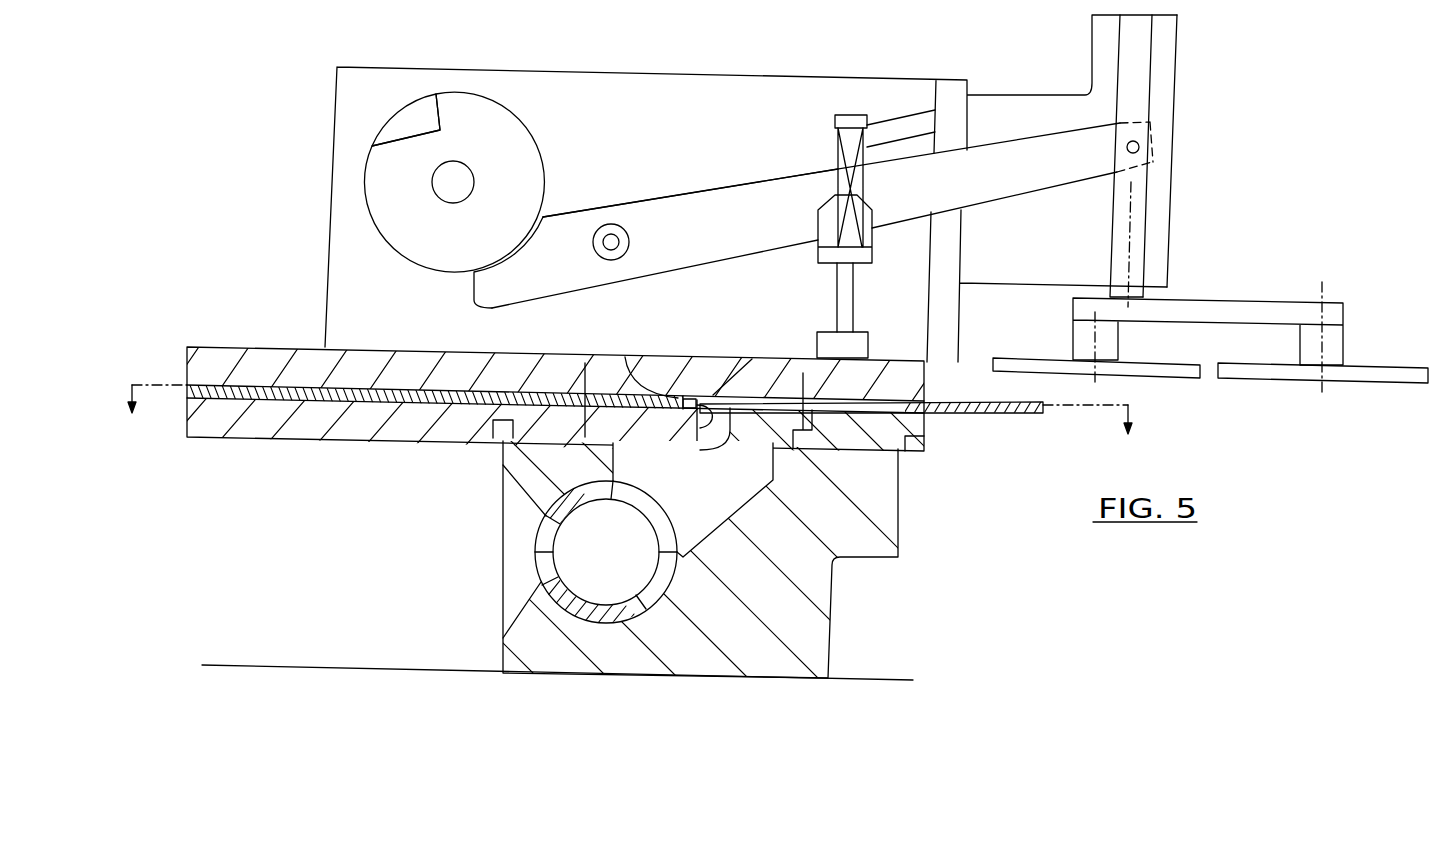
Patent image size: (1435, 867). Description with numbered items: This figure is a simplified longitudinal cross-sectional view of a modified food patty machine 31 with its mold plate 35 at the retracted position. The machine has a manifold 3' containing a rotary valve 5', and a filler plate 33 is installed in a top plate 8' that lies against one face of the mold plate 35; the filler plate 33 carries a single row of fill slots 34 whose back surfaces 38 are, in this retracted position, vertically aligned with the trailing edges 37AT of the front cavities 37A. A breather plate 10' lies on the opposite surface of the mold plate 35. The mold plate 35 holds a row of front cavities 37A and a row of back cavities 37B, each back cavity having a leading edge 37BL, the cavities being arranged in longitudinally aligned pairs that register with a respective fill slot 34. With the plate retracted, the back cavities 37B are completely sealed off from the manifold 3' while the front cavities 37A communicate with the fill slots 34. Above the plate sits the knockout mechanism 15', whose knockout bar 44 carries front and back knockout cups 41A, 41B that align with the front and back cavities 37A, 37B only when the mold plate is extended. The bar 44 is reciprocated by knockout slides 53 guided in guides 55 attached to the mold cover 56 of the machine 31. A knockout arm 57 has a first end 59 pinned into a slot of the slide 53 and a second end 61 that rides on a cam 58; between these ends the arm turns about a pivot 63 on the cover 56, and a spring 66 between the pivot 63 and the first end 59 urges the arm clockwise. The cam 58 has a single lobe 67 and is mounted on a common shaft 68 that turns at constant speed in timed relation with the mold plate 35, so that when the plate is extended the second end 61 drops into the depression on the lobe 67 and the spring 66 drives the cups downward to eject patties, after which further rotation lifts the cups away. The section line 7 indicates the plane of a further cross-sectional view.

The manifold 3' is at (626, 565).
The rotary valve 5' is at (553, 579).
The section line 7- 7 is at (632, 390).
The top plate 8' is at (941, 445).
The breather plate 10' is at (566, 362).
The knockout mechanism 15' is at (751, 187).
The food patty machine 31 is at (378, 490).
The filler plate 33 is at (757, 448).
The fill slots 34 is at (700, 449).
The mold plate 35 is at (1011, 425).
The front cavities 37A is at (880, 360).
The trailing edge 37AT is at (700, 397).
The back cavities 37B is at (525, 362).
The leading edge 37BL is at (625, 357).
The back surfaces 38 is at (733, 390).
The front knockout cups 41A is at (1368, 377).
The back knockout cups 41B is at (1163, 373).
The knockout bar 44 is at (1260, 290).
The knockout slides 53 is at (1140, 197).
The guides 55 is at (1165, 69).
The mold cover 56 is at (815, 98).
The knockout arm 57 is at (710, 208).
The cam 58 is at (410, 276).
The first end 59 is at (1152, 153).
The second end 61 is at (468, 283).
The pivot 63 is at (611, 238).
The spring 66 is at (852, 140).
The lobe 67 is at (533, 130).
The shaft 68 is at (447, 183).